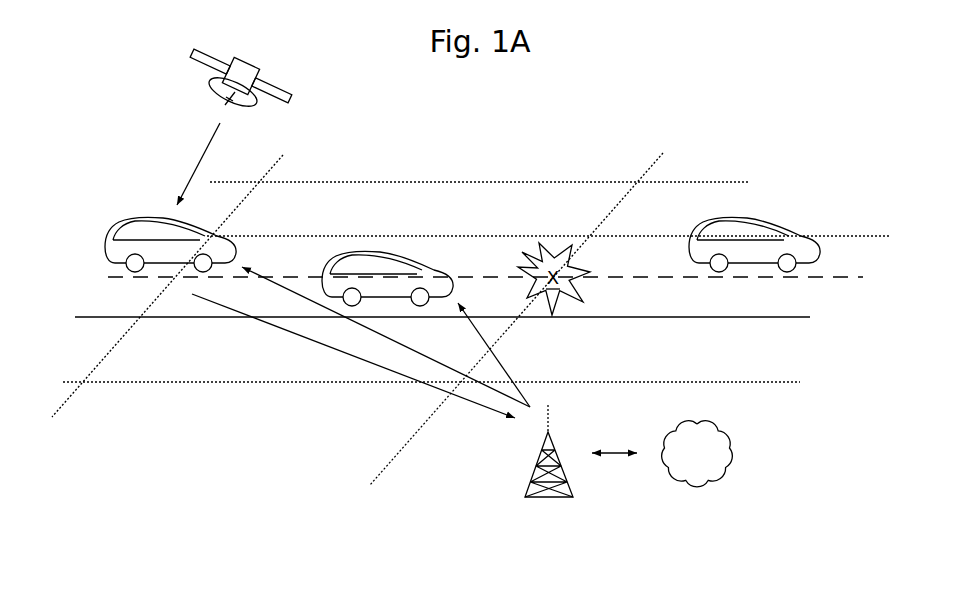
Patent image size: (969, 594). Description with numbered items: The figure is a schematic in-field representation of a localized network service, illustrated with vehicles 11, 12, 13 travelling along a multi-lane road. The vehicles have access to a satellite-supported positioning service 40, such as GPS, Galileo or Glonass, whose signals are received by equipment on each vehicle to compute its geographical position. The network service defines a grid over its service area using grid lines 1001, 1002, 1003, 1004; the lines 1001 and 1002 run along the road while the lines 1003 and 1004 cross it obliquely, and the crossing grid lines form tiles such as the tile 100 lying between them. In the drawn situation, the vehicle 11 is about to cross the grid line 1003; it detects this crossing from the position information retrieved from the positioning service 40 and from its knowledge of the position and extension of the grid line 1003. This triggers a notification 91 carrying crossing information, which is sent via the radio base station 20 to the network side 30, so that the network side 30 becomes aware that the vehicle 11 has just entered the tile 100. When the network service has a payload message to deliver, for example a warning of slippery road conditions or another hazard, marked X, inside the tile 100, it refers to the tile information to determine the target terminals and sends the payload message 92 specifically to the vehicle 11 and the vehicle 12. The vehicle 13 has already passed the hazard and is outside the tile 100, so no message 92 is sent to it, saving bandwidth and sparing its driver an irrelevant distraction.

The tile 100 is at (413, 222).
The grid line 1001 is at (372, 182).
The grid line 1002 is at (165, 383).
The grid line 1003 is at (68, 403).
The grid line 1004 is at (427, 423).
The vehicle 11 is at (135, 218).
The vehicle 12 is at (362, 253).
The vehicle 13 is at (763, 218).
The satellite-supported positioning service 40 is at (269, 85).
The notification 91 is at (348, 353).
The payload message 92 is at (503, 357).
The radio base station 20 is at (538, 498).
The network side 30 is at (686, 464).